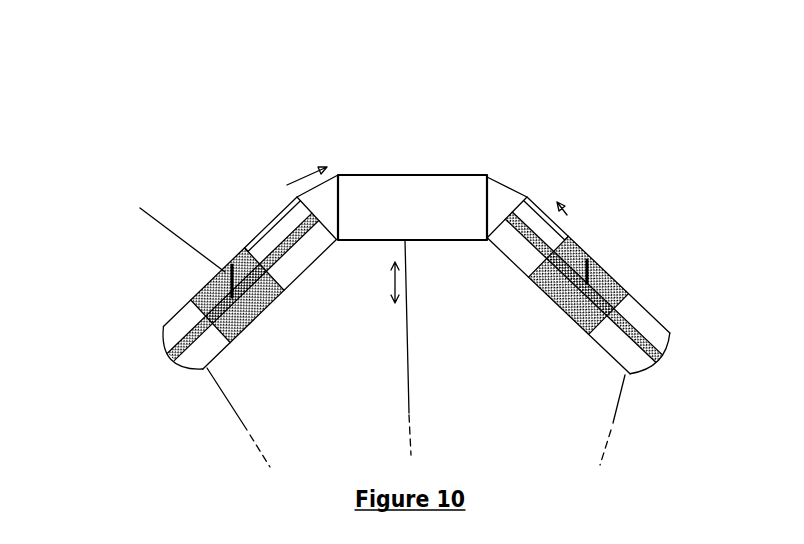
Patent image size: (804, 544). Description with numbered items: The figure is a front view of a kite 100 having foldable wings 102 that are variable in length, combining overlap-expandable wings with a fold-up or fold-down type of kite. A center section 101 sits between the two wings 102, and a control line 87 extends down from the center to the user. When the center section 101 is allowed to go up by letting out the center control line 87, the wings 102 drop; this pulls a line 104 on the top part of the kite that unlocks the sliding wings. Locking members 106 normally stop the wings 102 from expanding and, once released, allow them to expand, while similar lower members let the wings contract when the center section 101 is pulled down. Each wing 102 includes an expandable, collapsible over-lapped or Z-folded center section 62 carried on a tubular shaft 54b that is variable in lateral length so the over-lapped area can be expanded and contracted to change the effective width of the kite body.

The kite 100 is at (478, 141).
The center section 101 is at (393, 195).
The wings 102 is at (267, 222).
The line 104 is at (297, 197).
The center section 62 is at (190, 300).
The locking members 106 is at (523, 280).
The control line 87 is at (408, 338).
The tubular shaft 54b is at (198, 321).